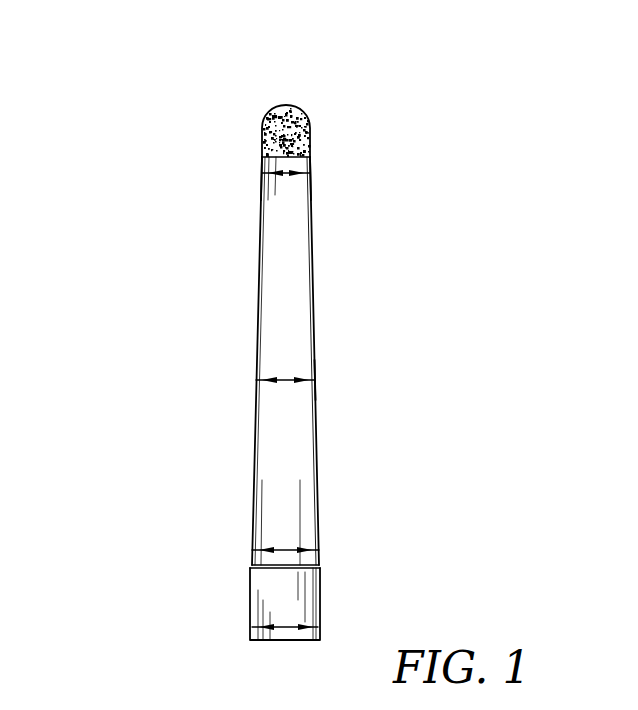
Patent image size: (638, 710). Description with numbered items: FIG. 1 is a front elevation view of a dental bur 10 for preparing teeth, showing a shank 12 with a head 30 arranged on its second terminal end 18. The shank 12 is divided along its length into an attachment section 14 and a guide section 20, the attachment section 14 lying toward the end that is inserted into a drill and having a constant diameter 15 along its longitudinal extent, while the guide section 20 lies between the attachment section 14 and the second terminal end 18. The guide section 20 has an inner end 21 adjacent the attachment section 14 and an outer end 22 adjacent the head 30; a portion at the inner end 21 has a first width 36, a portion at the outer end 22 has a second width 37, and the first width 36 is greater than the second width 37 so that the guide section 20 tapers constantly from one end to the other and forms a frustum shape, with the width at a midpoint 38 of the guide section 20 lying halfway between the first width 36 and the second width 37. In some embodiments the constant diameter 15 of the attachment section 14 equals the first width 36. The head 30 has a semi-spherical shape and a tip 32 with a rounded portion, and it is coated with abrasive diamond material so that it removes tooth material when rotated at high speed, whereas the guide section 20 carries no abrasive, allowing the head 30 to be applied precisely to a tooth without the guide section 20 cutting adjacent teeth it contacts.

The dental bur 10 is at (144, 136).
The shank 12 is at (444, 431).
The attachment section 14 is at (233, 608).
The constant diameter 15 is at (285, 629).
The second terminal end 18 is at (234, 167).
The guide section 20 is at (332, 375).
The inner end 21 is at (228, 558).
The outer end 22 is at (328, 167).
The head 30 is at (318, 113).
The tip 32 is at (266, 88).
The first width 36 is at (285, 547).
The second width 37 is at (285, 176).
The width at a midpoint 38 is at (285, 384).